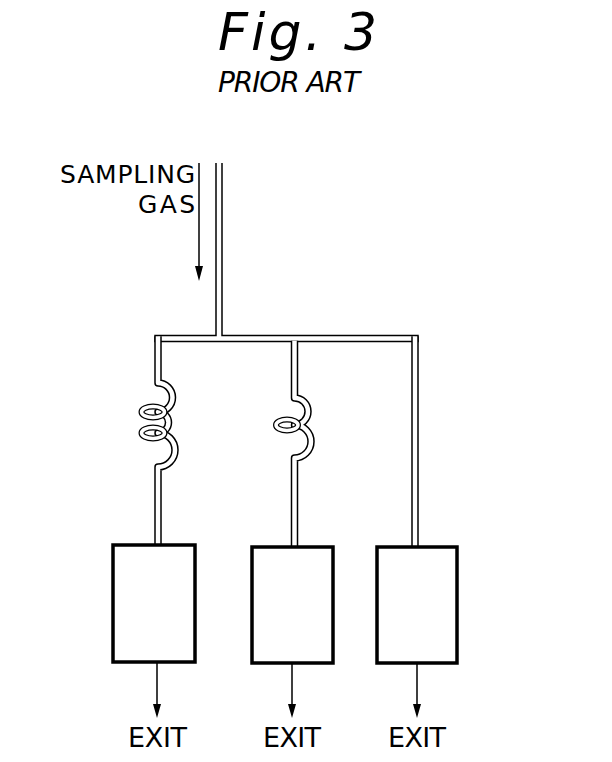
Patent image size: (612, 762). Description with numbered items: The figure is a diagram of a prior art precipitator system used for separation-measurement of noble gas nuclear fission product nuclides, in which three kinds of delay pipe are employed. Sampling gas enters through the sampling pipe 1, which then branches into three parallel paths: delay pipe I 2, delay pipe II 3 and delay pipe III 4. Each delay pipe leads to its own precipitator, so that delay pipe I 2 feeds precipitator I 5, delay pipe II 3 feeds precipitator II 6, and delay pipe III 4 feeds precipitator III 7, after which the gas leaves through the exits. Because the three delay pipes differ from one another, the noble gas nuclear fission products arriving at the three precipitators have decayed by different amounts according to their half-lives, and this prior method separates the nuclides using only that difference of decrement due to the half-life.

The sampling pipe 1 is at (223, 243).
The delay pipe I 2 is at (420, 399).
The delay pipe II 3 is at (309, 401).
The delay pipe III 4 is at (174, 392).
The precipitator I 5 is at (458, 601).
The precipitator II 6 is at (251, 613).
The precipitator III 7 is at (112, 605).